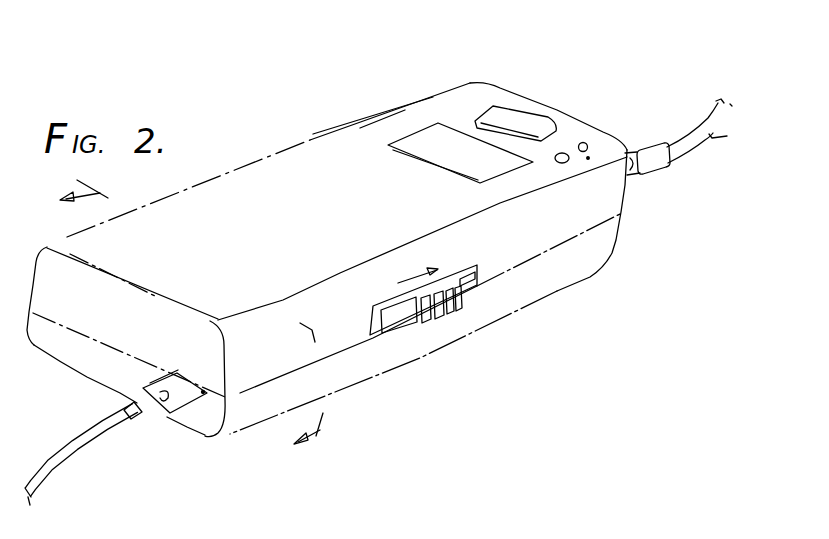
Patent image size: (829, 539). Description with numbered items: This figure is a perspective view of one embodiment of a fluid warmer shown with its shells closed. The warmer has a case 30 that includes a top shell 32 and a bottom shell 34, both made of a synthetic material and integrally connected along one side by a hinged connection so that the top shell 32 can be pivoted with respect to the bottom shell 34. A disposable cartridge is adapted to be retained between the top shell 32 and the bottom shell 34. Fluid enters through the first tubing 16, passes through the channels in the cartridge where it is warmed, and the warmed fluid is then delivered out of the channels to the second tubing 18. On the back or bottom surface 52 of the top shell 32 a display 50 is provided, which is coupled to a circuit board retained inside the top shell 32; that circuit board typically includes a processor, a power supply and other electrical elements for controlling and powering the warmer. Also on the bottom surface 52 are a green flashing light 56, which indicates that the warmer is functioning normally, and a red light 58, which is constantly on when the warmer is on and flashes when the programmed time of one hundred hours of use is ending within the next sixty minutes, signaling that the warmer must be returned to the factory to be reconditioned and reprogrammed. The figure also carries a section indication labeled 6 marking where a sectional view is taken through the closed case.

The section line 6- 6 is at (172, 326).
The first tubing 16 is at (709, 138).
The second tubing 18 is at (50, 478).
The case 30 is at (563, 388).
The top shell 32 is at (273, 171).
The bottom shell 34 is at (378, 361).
The display 50 is at (458, 142).
The bottom surface 52 is at (352, 208).
The green flashing light 56 is at (586, 143).
The red light 58 is at (563, 163).